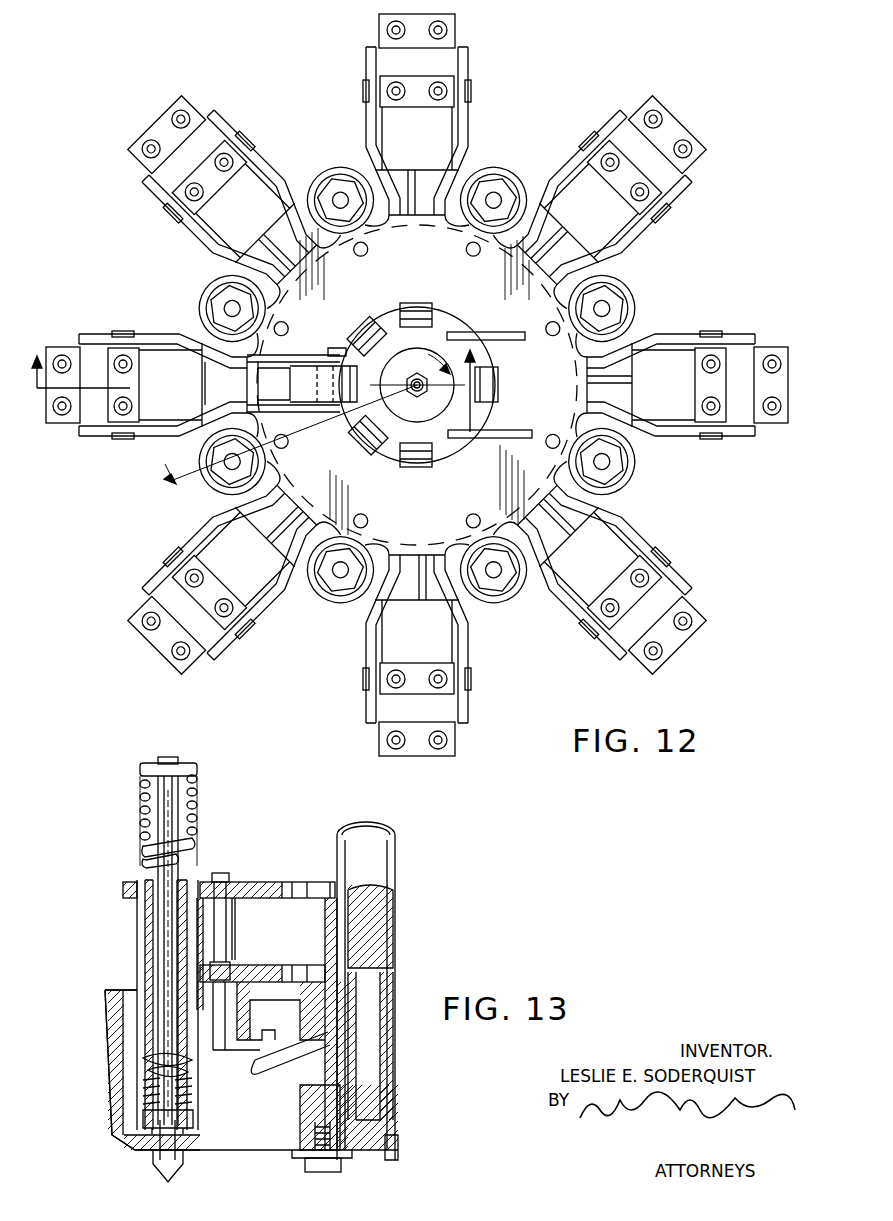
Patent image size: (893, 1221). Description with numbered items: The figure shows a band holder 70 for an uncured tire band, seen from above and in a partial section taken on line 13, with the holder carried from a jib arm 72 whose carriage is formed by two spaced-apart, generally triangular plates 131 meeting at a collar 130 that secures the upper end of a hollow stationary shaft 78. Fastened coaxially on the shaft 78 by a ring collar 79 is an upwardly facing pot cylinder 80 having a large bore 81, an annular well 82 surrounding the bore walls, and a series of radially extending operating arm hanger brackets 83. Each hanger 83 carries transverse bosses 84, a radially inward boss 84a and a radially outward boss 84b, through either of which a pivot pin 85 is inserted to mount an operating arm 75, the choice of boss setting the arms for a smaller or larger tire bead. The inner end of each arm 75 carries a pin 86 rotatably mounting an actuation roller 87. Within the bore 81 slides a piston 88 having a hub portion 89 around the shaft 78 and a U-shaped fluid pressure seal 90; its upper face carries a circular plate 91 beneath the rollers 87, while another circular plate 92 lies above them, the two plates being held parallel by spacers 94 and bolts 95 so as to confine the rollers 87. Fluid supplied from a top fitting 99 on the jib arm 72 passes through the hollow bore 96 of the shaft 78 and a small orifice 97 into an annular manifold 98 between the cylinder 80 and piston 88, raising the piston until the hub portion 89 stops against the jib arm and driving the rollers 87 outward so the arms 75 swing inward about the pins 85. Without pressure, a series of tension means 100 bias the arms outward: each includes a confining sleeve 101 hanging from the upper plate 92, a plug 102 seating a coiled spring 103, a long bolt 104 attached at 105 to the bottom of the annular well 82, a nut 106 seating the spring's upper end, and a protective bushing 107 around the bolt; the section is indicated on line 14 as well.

In FIG. 12, the band holder 70 is at (585, 72).
In FIG. 13, the band holder 70 is at (94, 742).
In FIG. 12, the jib arm 72 is at (482, 410).
In FIG. 12, the operating arm 75 is at (150, 172).
In FIG. 13, the hollow stationary shaft 78 is at (386, 1130).
In FIG. 13, the ring collar 79 is at (296, 1156).
In FIG. 13, the pot cylinder 80 is at (310, 1100).
In FIG. 13, the bore 81 is at (256, 1053).
In FIG. 12, the annular well 82 is at (608, 362).
In FIG. 13, the annular well 82 is at (106, 1038).
In FIG. 12, the operating arm hanger bracket 83 is at (258, 190).
In FIG. 12, the transverse boss 84 is at (222, 130).
In FIG. 12, the radially inward boss 84a is at (249, 165).
In FIG. 12, the radially outward boss 84b is at (194, 110).
In FIG. 12, the pivot pin 85 is at (214, 231).
In FIG. 12, the pin 86 is at (334, 348).
In FIG. 12, the actuation roller 87 is at (416, 304).
In FIG. 13, the piston 88 is at (325, 1002).
In FIG. 13, the hub portion 89 is at (328, 953).
In FIG. 13, the fluid pressure seal 90 is at (258, 1037).
In FIG. 13, the circular plate 91 is at (236, 973).
In FIG. 12, the circular plate 92 is at (302, 596).
In FIG. 13, the circular plate 92 is at (270, 883).
In FIG. 13, the spacer 94 is at (206, 932).
In FIG. 12, the bolt 95 is at (466, 247).
In FIG. 13, the bolt 95 is at (223, 877).
In FIG. 13, the hollow bore 96 is at (386, 986).
In FIG. 13, the orifice 97 is at (372, 1061).
In FIG. 13, the annular manifold 98 is at (285, 1074).
In FIG. 12, the top fitting 99 is at (422, 381).
In FIG. 12, the tension means 100 is at (494, 178).
In FIG. 13, the tension means 100 is at (213, 786).
In FIG. 13, the confining sleeve 101 is at (138, 934).
In FIG. 13, the plug 102 is at (146, 1120).
In FIG. 13, the coiled spring 103 is at (143, 1076).
In FIG. 13, the bolt 104 is at (158, 964).
In FIG. 13, the attachment 105 is at (158, 1165).
In FIG. 12, the nut 106 is at (228, 470).
In FIG. 13, the nut 106 is at (138, 770).
In FIG. 13, the protective bushing 107 is at (150, 914).
In FIG. 12, the collar 130 is at (438, 394).
In FIG. 12, the triangular plate 131 is at (506, 333).
In FIG. 12, the section line 13 is at (307, 409).
In FIG. 12, the section line 14 is at (248, 383).